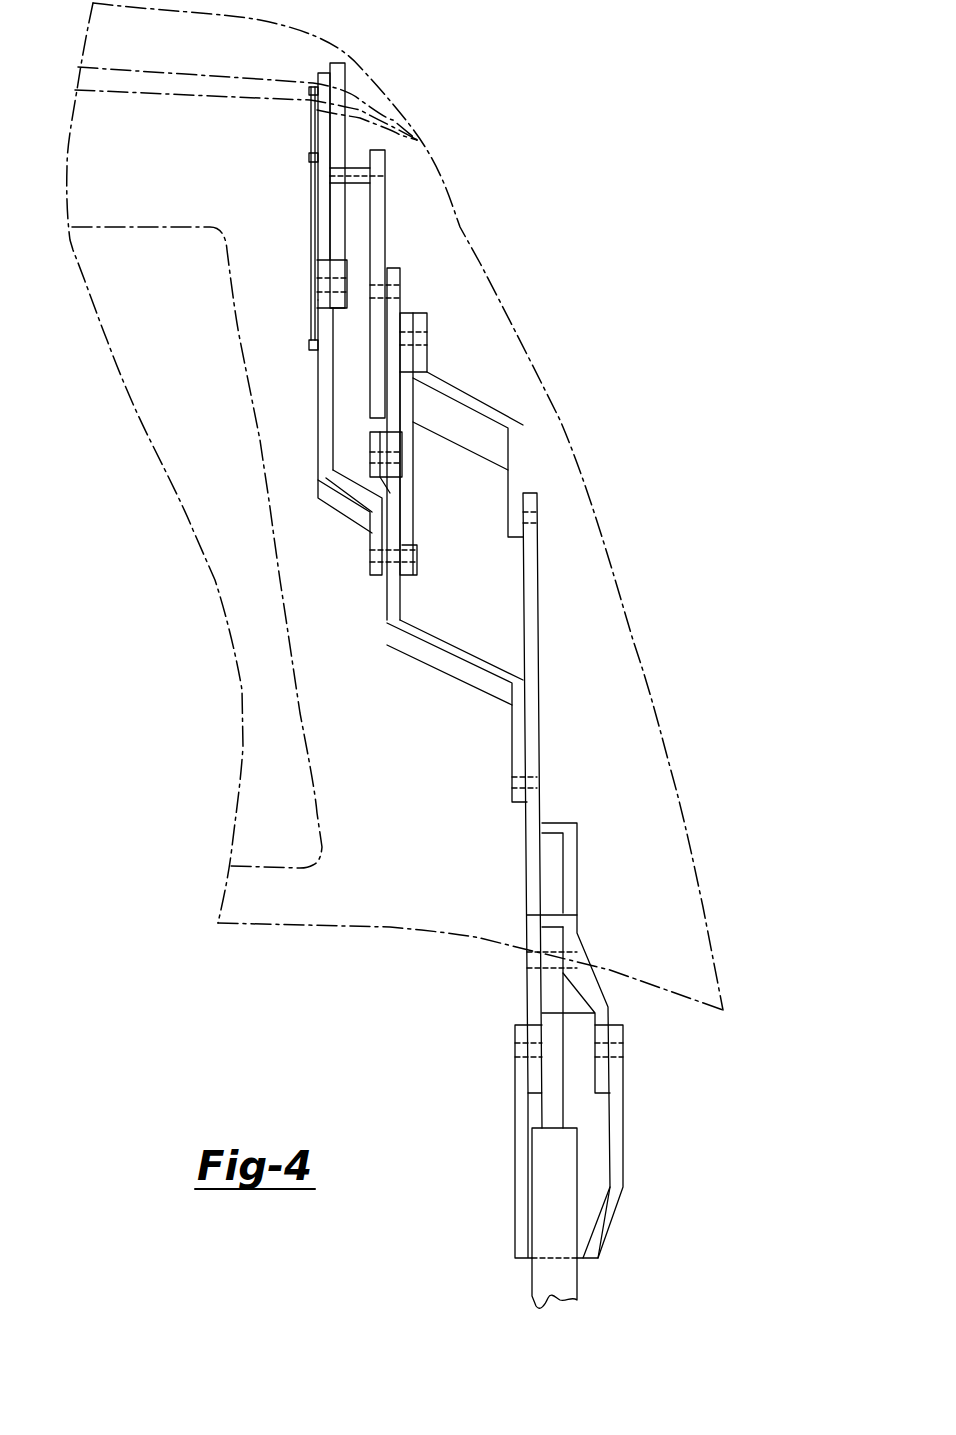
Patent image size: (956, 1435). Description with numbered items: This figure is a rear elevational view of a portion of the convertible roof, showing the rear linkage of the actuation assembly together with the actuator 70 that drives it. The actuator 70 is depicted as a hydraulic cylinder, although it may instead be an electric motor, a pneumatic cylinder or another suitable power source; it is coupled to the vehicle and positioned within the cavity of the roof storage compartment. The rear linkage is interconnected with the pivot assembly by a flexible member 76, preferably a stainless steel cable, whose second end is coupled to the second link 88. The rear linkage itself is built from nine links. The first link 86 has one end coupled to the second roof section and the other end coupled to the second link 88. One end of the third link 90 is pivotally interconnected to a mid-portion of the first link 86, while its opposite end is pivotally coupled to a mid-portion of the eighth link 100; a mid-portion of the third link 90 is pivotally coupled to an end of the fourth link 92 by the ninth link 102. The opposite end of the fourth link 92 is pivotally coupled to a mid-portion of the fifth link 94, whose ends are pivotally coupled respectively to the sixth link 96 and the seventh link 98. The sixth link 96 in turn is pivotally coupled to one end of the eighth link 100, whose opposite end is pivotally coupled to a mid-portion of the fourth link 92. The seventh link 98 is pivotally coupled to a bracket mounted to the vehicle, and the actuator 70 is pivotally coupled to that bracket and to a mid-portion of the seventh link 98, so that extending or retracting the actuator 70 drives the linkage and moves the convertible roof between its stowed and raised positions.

The actuator 70 is at (537, 1185).
The flexible member 76 is at (316, 227).
The first link 86 is at (333, 212).
The second link 88 is at (327, 398).
The third link 90 is at (380, 200).
The fourth link 92 is at (440, 665).
The fifth link 94 is at (537, 655).
The sixth link 96 is at (465, 400).
The seventh link 98 is at (587, 953).
The eighth link 100 is at (412, 517).
The ninth link 102 is at (395, 277).